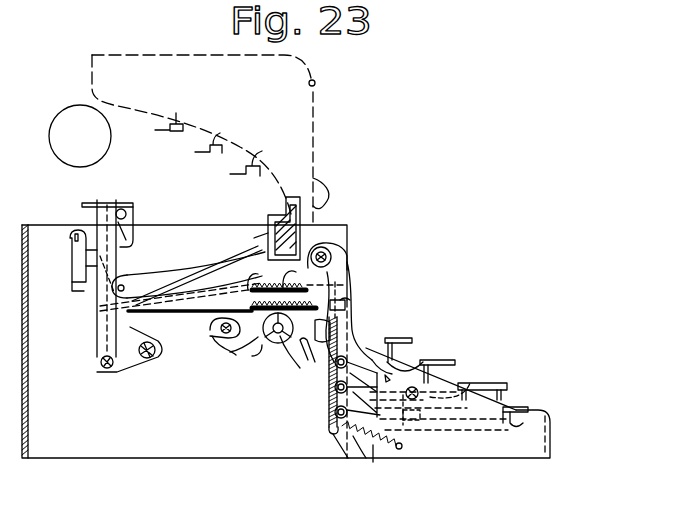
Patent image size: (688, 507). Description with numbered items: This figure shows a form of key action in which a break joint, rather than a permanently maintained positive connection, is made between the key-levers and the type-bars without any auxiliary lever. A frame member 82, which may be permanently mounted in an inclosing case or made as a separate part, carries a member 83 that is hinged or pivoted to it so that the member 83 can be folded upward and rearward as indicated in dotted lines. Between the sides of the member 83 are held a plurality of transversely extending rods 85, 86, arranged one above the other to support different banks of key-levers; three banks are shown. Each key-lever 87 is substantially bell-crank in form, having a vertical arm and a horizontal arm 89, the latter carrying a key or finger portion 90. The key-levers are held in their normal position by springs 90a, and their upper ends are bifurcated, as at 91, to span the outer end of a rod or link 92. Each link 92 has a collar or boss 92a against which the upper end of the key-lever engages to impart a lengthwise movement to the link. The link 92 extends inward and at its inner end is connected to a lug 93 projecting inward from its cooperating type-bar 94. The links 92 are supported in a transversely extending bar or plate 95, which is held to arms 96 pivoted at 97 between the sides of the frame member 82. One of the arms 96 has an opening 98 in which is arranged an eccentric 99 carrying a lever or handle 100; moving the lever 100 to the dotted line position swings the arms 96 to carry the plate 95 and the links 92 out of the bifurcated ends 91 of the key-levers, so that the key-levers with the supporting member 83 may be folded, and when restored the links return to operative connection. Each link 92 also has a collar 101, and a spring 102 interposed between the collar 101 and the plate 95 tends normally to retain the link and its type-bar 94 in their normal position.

The frame member 82 is at (160, 441).
The member 83 is at (373, 462).
The transversely extending rod 85 is at (335, 411).
The transversely extending rod 86 is at (330, 428).
The key-lever 87 is at (368, 350).
The horizontal arm 89 is at (400, 355).
The key or finger portion 90 is at (390, 340).
The spring 90a is at (305, 422).
The bifurcated end 91 is at (318, 336).
The rod or link 92 is at (338, 302).
The collar or boss 92a is at (352, 299).
The lug 93 is at (103, 306).
The type-bar 94 is at (168, 276).
The transversely extending bar or plate 95 is at (308, 302).
The arm 96 is at (240, 346).
The pivot 97 is at (212, 336).
The opening 98 is at (257, 353).
The eccentric 99 is at (273, 352).
The lever or handle 100 is at (300, 375).
The collar 101 is at (213, 262).
The spring 102 is at (246, 252).